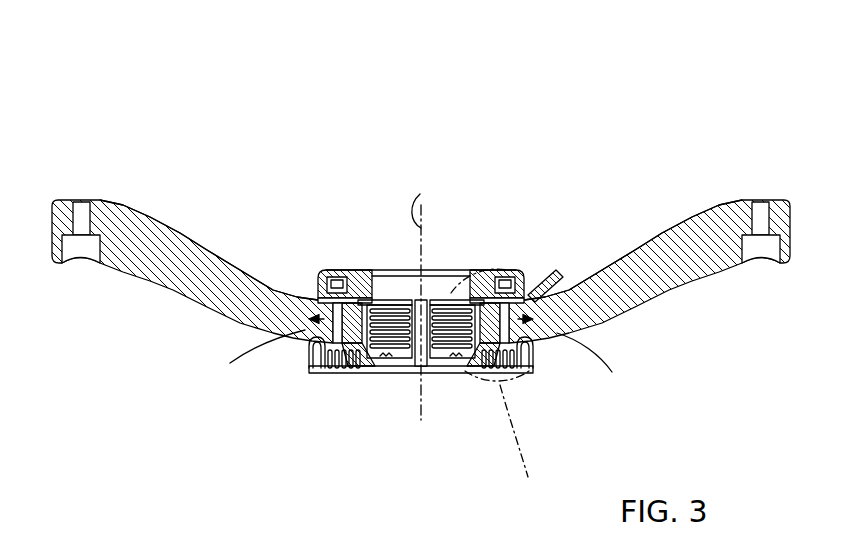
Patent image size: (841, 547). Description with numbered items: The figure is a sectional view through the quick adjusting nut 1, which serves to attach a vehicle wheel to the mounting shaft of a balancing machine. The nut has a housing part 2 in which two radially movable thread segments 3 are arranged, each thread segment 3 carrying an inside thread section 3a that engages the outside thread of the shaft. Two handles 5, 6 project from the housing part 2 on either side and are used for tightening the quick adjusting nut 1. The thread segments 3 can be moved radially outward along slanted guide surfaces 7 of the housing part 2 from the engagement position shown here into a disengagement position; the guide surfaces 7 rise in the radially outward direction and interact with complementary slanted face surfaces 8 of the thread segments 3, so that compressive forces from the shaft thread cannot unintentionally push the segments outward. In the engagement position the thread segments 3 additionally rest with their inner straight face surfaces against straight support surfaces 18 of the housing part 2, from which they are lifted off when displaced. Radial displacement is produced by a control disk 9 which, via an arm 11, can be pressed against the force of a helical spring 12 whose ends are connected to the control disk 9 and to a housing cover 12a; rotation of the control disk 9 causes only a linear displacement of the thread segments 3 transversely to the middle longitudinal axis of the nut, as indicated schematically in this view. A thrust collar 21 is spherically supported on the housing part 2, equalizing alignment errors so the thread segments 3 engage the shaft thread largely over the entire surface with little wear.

The quick adjusting nut 1 is at (247, 117).
The housing part 2 is at (497, 282).
The thread segment 3 is at (268, 285).
The inside thread section 3a is at (427, 300).
The handle 5 is at (150, 215).
The handle 6 is at (688, 213).
The guide surface 7 is at (350, 298).
The slanted face surface 8 is at (372, 368).
The control disk 9 is at (316, 283).
The arm 11 is at (536, 280).
The helical spring 12 is at (340, 270).
The housing cover 12a is at (368, 272).
The support surface 18 is at (443, 358).
The thrust collar 21 is at (328, 350).